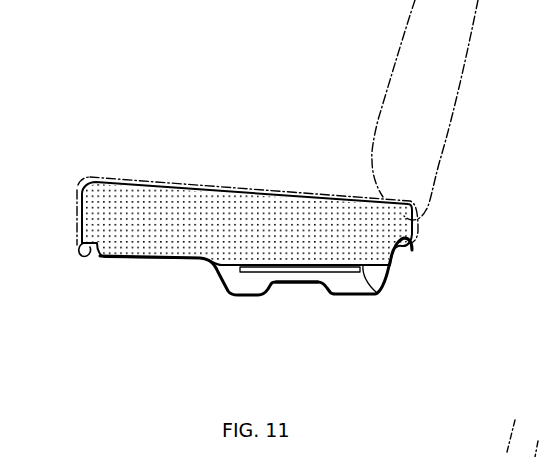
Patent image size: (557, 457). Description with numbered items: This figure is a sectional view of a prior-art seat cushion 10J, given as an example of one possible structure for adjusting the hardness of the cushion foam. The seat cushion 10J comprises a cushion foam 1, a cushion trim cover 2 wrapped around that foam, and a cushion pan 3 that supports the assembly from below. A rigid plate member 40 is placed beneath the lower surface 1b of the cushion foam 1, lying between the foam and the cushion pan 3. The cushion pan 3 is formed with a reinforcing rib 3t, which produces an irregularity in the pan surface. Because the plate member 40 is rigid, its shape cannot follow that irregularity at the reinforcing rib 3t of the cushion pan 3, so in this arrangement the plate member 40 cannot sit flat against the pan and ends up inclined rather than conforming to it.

The seat cushion 10J is at (157, 120).
The cushion foam 1 is at (253, 208).
The lower surface 1b is at (376, 293).
The cushion trim cover 2 is at (104, 179).
The cushion pan 3 is at (388, 278).
The reinforcing rib 3t is at (313, 282).
The plate member 40 is at (253, 272).